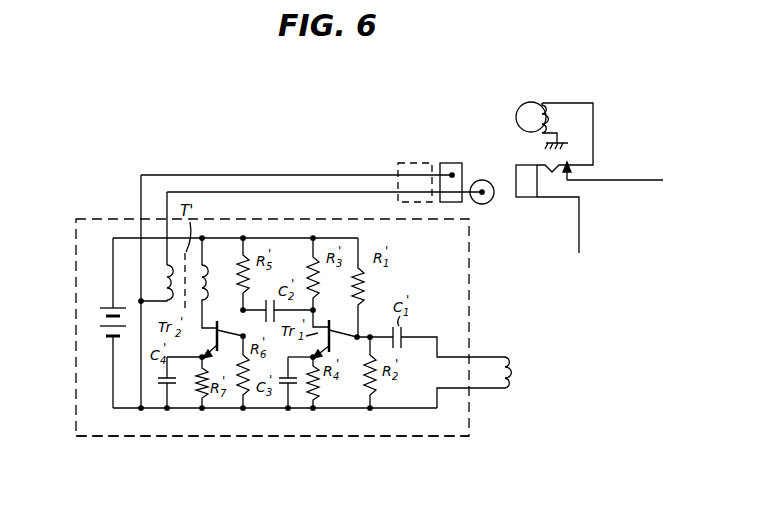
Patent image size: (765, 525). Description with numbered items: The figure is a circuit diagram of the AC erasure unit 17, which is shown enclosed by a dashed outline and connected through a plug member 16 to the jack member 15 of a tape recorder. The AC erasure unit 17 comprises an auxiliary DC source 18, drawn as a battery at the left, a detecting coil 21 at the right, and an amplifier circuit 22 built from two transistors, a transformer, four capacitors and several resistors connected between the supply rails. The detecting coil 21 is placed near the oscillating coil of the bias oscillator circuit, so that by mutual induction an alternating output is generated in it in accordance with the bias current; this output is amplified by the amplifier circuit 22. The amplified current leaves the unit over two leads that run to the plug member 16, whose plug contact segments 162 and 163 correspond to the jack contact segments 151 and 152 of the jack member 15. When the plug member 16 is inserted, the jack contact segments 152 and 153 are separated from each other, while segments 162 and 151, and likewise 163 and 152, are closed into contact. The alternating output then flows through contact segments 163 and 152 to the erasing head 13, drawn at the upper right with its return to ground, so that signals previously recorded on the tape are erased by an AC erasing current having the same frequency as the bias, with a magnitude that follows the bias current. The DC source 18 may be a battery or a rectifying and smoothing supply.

The erasing head 13 is at (536, 102).
The jack member 15 is at (550, 193).
The plug member 16 is at (421, 160).
The AC erasure unit 17 is at (90, 254).
The auxiliary DC source 18 is at (106, 316).
The detecting coil 21 is at (505, 389).
The amplifier circuit 22 is at (137, 437).
The jack contact segment 151 is at (522, 192).
The jack contact segment 152 is at (562, 164).
The jack contact segment 153 is at (603, 181).
The plug contact segment 162 is at (455, 173).
The plug contact segment 163 is at (486, 185).